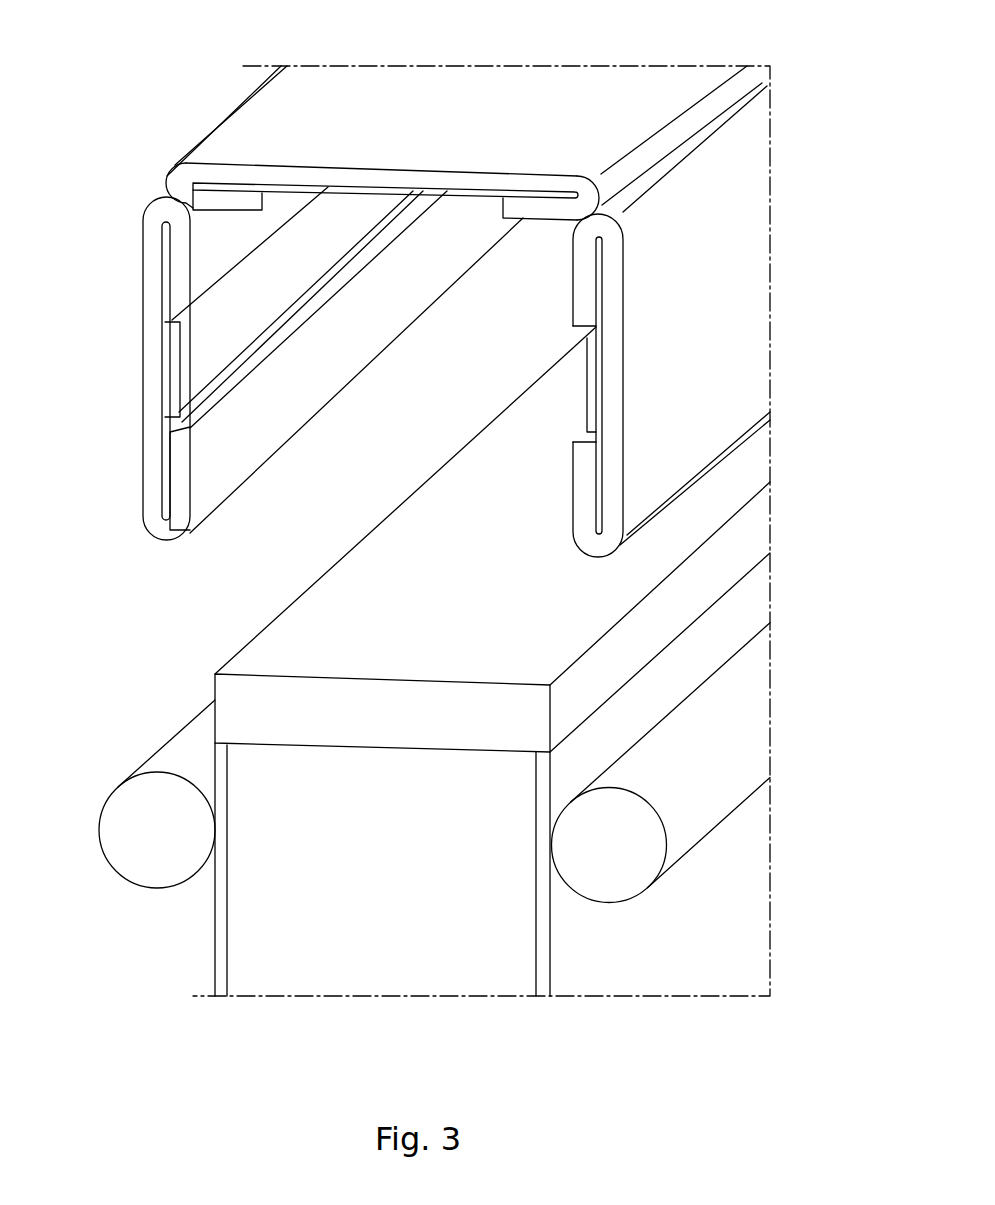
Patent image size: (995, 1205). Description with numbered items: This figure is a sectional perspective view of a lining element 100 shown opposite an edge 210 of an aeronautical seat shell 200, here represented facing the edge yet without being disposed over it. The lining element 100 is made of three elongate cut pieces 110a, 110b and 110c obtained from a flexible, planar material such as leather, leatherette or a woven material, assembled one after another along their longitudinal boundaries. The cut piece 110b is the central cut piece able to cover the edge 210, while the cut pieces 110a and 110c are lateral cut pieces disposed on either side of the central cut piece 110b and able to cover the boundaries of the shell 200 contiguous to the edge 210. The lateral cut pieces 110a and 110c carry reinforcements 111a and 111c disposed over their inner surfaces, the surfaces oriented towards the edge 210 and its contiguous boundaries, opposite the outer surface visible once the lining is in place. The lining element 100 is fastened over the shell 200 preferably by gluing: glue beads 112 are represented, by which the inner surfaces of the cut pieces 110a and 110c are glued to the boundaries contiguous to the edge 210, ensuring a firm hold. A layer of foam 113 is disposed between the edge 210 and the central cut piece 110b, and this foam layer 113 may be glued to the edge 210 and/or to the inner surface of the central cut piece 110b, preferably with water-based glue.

The lining element 100 is at (110, 102).
The lateral cut piece 110a is at (152, 398).
The central cut piece 110b is at (448, 90).
The lateral cut piece 110c is at (755, 296).
The reinforcement 111a is at (172, 350).
The reinforcement 111c is at (593, 376).
The glue beads 112 is at (144, 868).
The foam layer 113 is at (363, 543).
The aeronautical seat shell 200 is at (375, 978).
The edge 210 is at (243, 742).